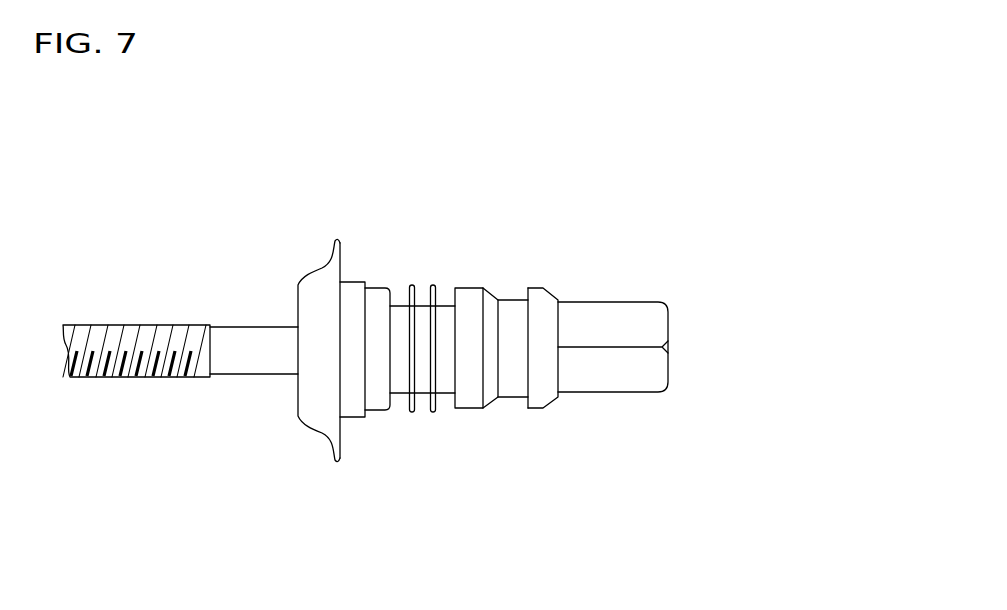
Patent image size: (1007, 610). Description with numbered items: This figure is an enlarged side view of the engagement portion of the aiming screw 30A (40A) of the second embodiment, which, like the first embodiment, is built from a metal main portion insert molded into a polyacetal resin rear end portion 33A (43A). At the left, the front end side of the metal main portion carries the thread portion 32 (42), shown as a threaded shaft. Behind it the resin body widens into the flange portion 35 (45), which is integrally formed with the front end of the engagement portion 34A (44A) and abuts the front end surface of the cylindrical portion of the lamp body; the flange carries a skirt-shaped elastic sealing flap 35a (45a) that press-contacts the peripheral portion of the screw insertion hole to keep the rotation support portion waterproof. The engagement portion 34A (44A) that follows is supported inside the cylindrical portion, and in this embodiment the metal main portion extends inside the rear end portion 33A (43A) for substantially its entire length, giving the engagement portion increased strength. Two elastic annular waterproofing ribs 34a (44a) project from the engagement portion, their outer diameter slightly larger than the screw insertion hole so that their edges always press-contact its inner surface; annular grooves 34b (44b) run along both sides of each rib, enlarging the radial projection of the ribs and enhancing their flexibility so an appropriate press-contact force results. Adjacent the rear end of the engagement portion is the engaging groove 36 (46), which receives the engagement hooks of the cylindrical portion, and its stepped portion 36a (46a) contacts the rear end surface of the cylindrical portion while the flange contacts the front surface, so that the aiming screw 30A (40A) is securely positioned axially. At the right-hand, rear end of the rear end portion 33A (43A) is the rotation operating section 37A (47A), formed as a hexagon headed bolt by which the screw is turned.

The aiming screw 30A is at (450, 371).
The aiming screw 40A is at (148, 379).
The thread portion 32 is at (180, 318).
The thread portion 42 is at (140, 325).
The rear end portion 33A is at (560, 383).
The rear end portion 43A is at (508, 403).
The engagement portion 34A is at (408, 440).
The engagement portion 44A is at (384, 412).
The waterproofing ribs 34a is at (434, 278).
The waterproofing ribs 44a is at (411, 285).
The annular grooves 34b is at (501, 437).
The annular grooves 44b is at (447, 394).
The flange portion 35 is at (291, 385).
The flange portion 45 is at (303, 423).
The elastic sealing flap 35a is at (285, 318).
The elastic sealing flap 45a is at (331, 243).
The engaging groove 36 is at (589, 289).
The engaging groove 46 is at (512, 312).
The stepped portion 36a is at (520, 305).
The stepped portion 46a is at (528, 323).
The rotation operating section 37A is at (698, 347).
The rotation operating section 47A is at (670, 347).